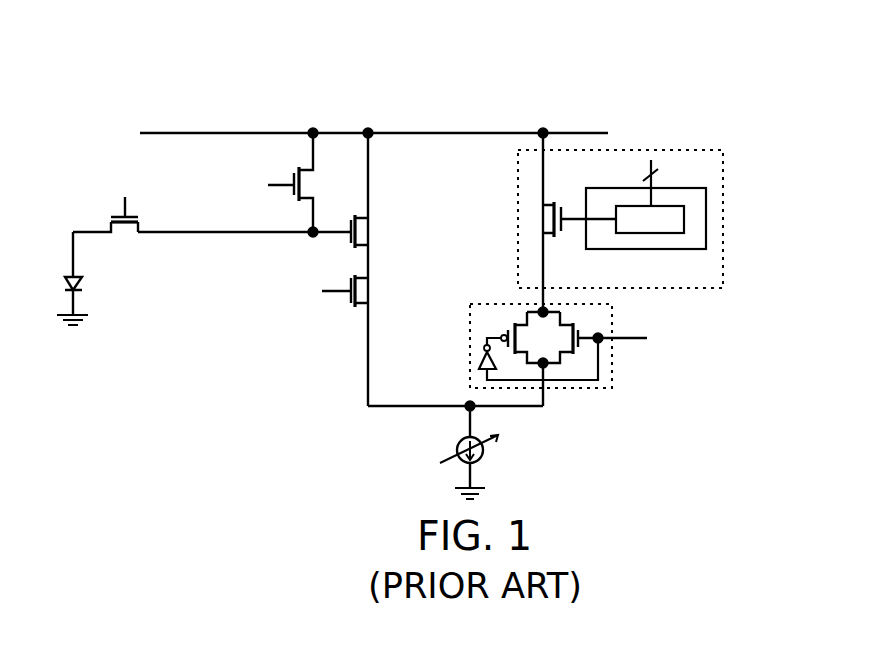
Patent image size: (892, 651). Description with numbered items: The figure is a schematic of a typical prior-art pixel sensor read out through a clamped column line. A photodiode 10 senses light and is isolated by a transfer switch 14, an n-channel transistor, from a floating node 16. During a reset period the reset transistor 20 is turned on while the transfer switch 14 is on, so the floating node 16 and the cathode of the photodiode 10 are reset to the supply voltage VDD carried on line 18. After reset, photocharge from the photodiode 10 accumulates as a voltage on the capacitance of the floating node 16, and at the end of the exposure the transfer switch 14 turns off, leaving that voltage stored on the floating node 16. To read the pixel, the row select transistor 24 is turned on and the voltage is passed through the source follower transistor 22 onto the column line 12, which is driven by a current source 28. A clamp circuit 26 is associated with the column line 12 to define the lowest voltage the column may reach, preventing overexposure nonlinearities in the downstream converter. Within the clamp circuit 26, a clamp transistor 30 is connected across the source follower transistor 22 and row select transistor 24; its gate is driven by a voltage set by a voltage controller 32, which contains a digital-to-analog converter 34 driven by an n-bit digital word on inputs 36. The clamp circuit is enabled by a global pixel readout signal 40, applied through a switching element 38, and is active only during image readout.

The photodiode 10 is at (85, 285).
The column line 12 is at (466, 425).
The transfer switch 14 is at (103, 215).
The floating node 16 is at (232, 236).
The VDD line 18 is at (460, 133).
The reset transistor 20 is at (290, 180).
The source follower transistor 22 is at (362, 230).
The row select transistor 24 is at (362, 293).
The clamp circuit 26 is at (693, 156).
The current source 28 is at (485, 452).
The clamp transistor 30 is at (540, 219).
The voltage controller 32 is at (707, 200).
The digital-to-analog converter 34 is at (685, 228).
The inputs 36 is at (645, 158).
The transmission gate 38 is at (468, 340).
The global pixel readout signal (GPR) 40 is at (630, 345).